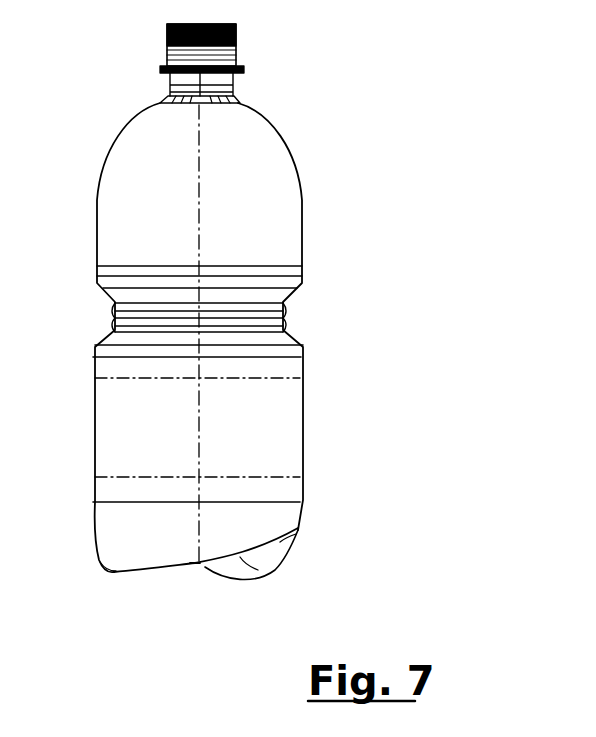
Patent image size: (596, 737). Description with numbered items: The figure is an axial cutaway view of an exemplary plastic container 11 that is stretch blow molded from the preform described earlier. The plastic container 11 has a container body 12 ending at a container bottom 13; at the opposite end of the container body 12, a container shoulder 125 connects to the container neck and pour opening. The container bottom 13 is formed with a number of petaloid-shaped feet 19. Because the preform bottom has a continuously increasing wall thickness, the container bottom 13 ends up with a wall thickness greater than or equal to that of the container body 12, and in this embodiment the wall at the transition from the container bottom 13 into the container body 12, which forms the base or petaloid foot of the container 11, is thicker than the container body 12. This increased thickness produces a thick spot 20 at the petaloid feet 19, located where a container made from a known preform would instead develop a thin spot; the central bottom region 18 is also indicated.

The plastic container 11 is at (345, 113).
The container shoulder 125 is at (303, 173).
The container body 12 is at (92, 458).
The container bottom 13 is at (156, 592).
The standing surface 18 is at (195, 563).
The petaloid feet 19 is at (250, 558).
The thick spot 20 is at (300, 535).